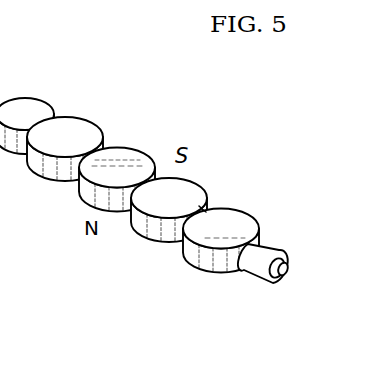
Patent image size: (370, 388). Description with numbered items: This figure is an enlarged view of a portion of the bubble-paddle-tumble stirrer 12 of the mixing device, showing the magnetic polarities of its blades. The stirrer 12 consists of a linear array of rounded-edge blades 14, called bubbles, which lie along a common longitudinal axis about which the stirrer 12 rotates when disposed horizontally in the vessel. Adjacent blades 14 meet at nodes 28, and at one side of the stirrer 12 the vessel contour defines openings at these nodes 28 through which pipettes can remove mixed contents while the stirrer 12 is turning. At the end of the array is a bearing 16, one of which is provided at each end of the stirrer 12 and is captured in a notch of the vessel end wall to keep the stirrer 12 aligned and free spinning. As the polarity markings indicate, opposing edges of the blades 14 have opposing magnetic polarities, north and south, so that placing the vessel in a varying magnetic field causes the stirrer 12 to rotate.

The bubble-paddle-tumble stirrer 12 is at (154, 171).
The rounded-edge blade 14 is at (139, 152).
The bearing 16 is at (250, 268).
The node 28 is at (202, 210).